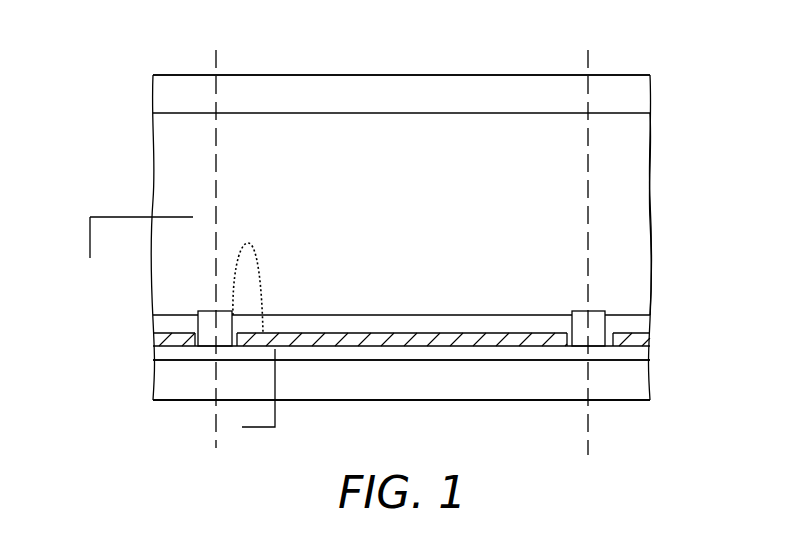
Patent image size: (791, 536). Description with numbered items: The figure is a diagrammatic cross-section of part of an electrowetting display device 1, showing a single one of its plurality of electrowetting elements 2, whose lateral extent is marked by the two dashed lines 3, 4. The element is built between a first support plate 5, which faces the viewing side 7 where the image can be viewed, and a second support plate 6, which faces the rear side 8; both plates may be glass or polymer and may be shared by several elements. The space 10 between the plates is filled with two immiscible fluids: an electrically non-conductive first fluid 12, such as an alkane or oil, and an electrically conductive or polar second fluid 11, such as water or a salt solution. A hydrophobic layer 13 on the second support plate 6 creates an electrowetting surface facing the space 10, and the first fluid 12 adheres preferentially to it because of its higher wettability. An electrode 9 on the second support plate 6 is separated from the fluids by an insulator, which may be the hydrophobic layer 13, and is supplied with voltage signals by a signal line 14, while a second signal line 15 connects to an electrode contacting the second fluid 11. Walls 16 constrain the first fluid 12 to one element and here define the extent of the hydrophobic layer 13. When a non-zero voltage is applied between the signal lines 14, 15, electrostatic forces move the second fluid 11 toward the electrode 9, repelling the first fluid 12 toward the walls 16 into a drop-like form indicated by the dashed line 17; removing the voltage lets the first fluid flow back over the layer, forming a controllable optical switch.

The electrowetting display device 1 is at (696, 61).
The electrowetting element 2 is at (414, 64).
The dashed line 3 is at (216, 56).
The dashed line 4 is at (589, 57).
The first support plate 5 is at (632, 82).
The second support plate 6 is at (640, 380).
The viewing side 7 is at (270, 75).
The rear side 8 is at (386, 400).
The electrode 9 is at (391, 353).
The space 10 is at (470, 130).
The second fluid 11 is at (636, 213).
The first fluid 12 is at (553, 327).
The hydrophobic layer 13 is at (472, 340).
The signal line 14 is at (258, 427).
The second signal line 15 is at (90, 232).
The wall 16 is at (207, 318).
The dashed line 17 is at (239, 258).